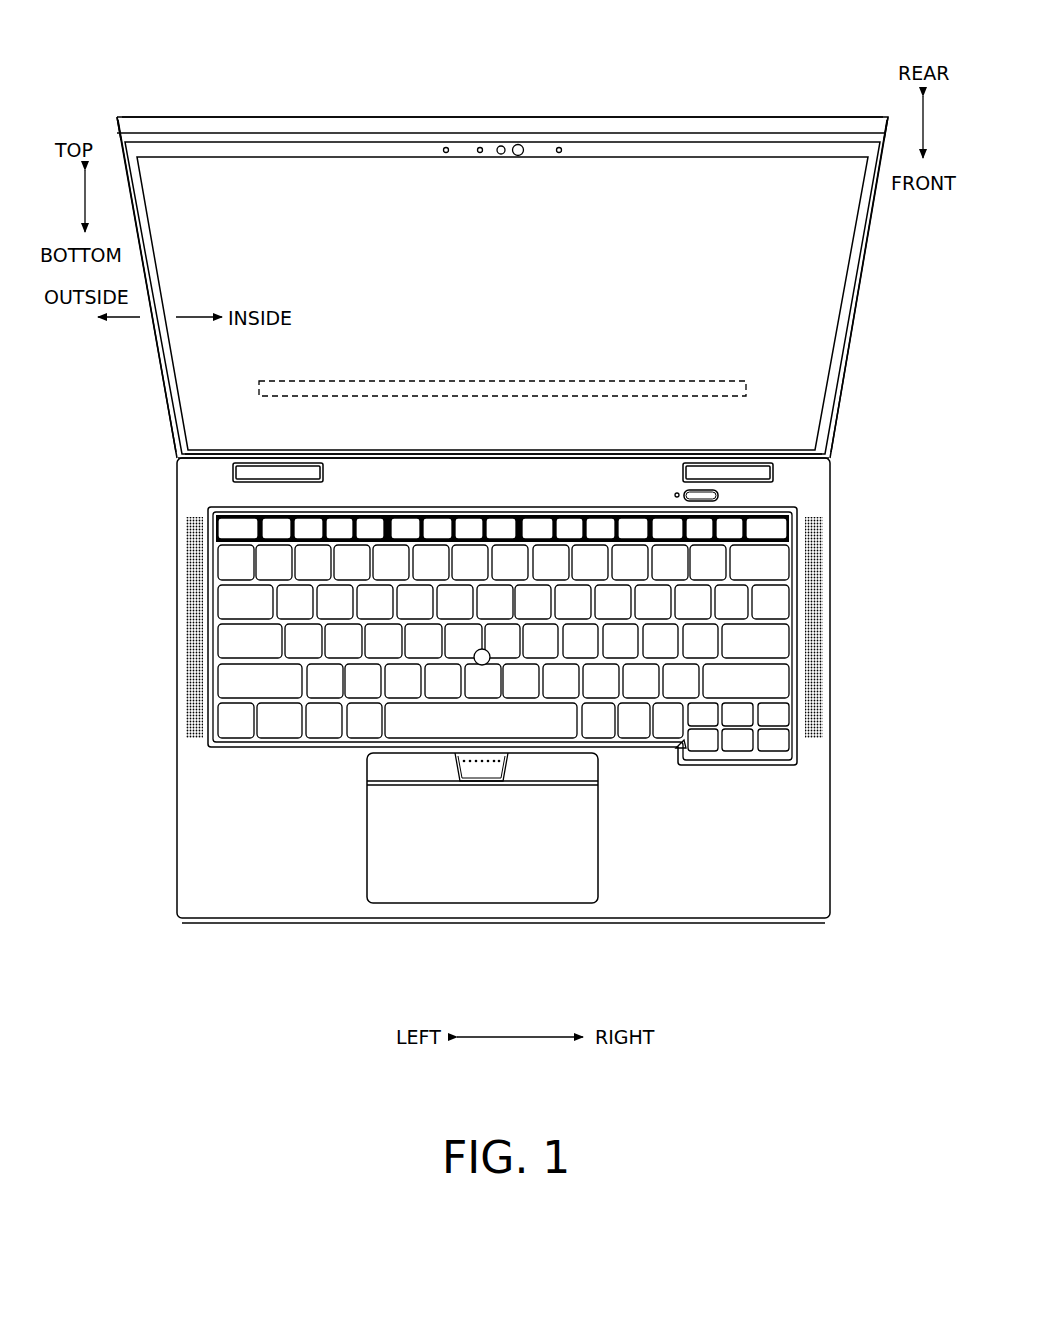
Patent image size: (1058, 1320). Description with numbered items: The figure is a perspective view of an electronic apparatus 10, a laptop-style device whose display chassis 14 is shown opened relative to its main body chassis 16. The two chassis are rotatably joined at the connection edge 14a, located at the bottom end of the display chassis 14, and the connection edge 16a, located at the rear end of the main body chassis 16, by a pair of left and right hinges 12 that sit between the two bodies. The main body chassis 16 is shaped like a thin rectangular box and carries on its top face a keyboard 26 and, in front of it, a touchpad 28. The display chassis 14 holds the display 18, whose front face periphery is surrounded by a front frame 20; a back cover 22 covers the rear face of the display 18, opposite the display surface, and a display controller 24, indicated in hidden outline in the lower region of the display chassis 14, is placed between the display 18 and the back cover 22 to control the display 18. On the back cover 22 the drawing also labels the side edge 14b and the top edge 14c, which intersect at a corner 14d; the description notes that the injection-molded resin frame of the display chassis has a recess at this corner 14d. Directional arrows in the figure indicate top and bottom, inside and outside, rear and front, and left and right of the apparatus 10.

The electronic apparatus 10 is at (816, 89).
The hinge 12 is at (277, 470).
The display chassis 14 is at (628, 185).
The connection edge 14a is at (527, 462).
The side edge 14b is at (124, 160).
The top edge 14c is at (462, 117).
The corner 14d is at (125, 118).
The main body chassis 16 is at (706, 900).
The connection edge 16a is at (373, 460).
The display 18 is at (808, 325).
The front frame 20 is at (382, 147).
The back cover 22 is at (700, 128).
The display controller 24 is at (345, 380).
The keyboard 26 is at (735, 600).
The touchpad 28 is at (437, 882).